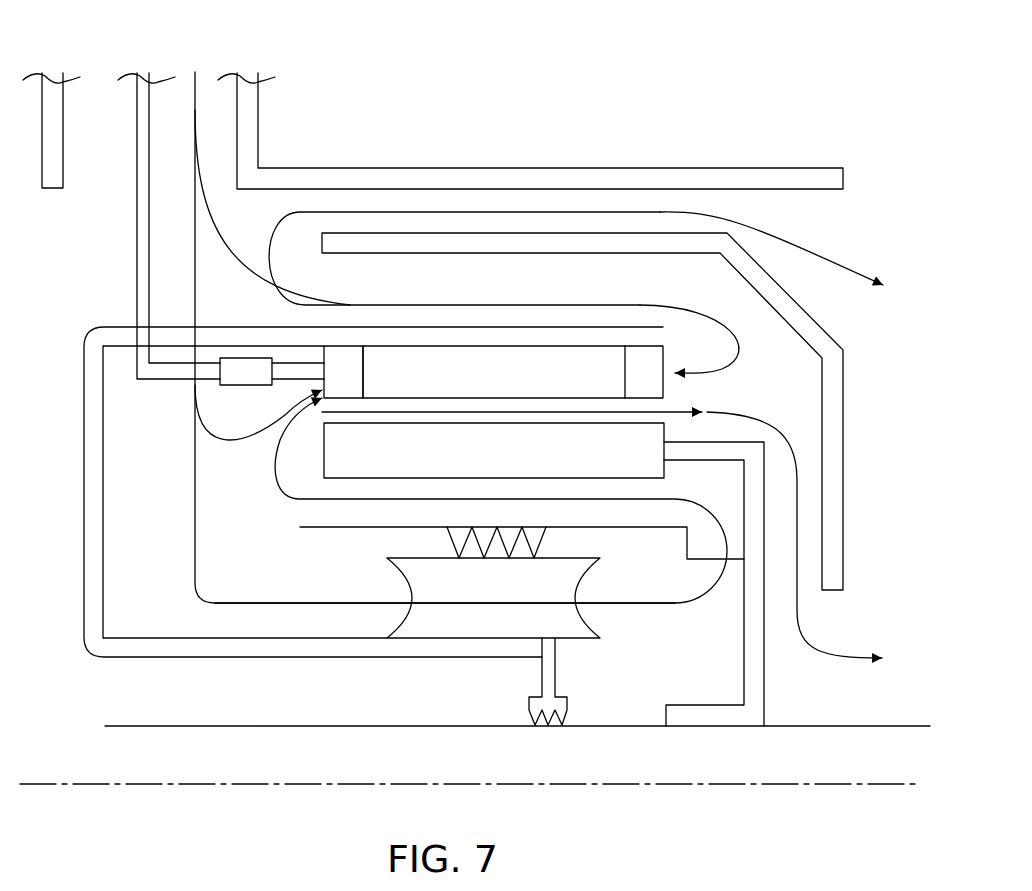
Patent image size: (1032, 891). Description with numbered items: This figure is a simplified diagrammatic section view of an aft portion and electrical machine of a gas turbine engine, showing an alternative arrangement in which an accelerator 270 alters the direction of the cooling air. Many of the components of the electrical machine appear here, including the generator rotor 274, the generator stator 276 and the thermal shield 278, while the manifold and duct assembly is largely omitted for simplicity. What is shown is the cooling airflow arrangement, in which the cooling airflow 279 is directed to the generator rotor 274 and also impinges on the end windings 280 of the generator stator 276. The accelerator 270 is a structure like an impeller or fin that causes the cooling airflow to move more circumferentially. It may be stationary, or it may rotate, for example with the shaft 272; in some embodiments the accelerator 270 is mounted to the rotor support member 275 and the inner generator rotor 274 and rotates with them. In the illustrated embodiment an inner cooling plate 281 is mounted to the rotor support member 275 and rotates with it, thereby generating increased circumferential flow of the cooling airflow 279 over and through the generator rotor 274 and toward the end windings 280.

The accelerator 270 is at (517, 598).
The shaft 272 is at (178, 725).
The generator rotor 274 is at (517, 463).
The rotor support member 275 is at (744, 665).
The generator stator 276 is at (489, 353).
The thermal shield 278 is at (193, 96).
The cooling airflow 279 is at (825, 447).
The end windings 280 is at (345, 352).
The inner cooling plate 281 is at (337, 528).